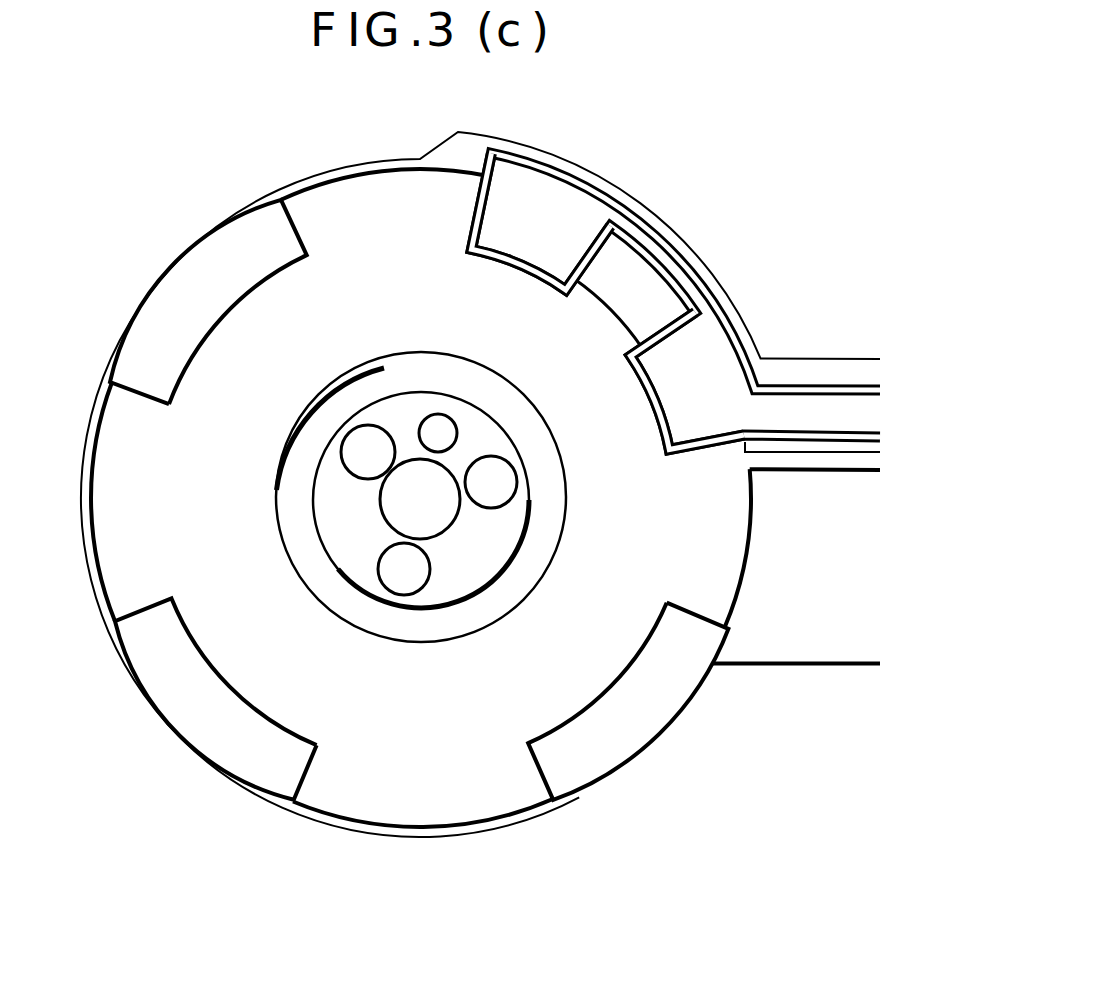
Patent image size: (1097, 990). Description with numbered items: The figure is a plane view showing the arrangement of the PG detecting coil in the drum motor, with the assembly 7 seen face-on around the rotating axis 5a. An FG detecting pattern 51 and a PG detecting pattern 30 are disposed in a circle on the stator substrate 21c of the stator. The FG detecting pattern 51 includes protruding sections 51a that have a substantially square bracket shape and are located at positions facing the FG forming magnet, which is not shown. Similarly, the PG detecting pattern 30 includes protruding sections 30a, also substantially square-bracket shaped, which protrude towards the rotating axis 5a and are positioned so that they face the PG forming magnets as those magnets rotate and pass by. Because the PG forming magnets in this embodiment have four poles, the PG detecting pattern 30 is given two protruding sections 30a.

The rotor disk 7 is at (133, 163).
The FG detecting pattern 51 is at (266, 276).
The protruding sections 51a is at (238, 693).
The PG detecting pattern 30 is at (602, 182).
The protruding sections 30a is at (514, 266).
The stator substrate 21c is at (824, 357).
The rotating axis 5a is at (488, 558).